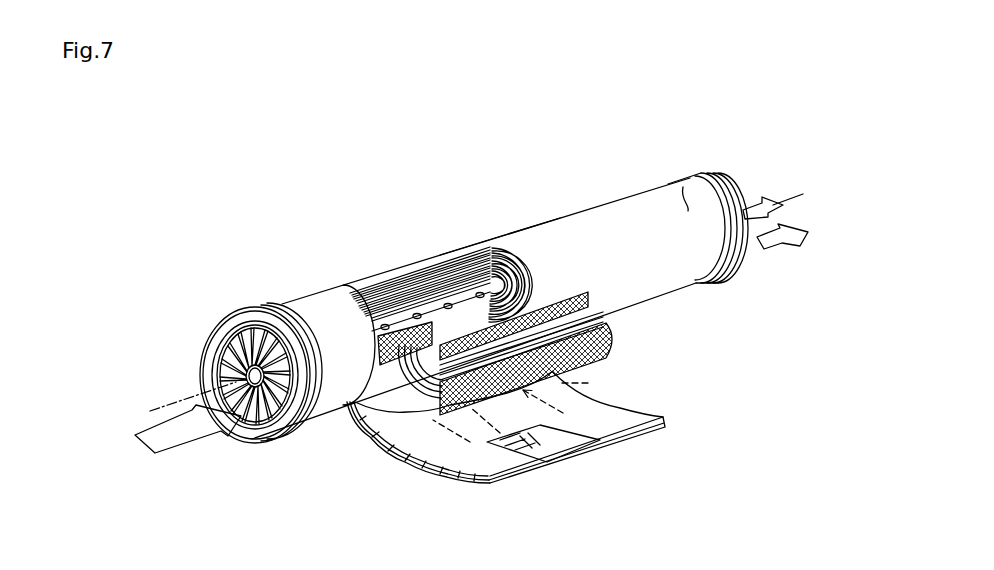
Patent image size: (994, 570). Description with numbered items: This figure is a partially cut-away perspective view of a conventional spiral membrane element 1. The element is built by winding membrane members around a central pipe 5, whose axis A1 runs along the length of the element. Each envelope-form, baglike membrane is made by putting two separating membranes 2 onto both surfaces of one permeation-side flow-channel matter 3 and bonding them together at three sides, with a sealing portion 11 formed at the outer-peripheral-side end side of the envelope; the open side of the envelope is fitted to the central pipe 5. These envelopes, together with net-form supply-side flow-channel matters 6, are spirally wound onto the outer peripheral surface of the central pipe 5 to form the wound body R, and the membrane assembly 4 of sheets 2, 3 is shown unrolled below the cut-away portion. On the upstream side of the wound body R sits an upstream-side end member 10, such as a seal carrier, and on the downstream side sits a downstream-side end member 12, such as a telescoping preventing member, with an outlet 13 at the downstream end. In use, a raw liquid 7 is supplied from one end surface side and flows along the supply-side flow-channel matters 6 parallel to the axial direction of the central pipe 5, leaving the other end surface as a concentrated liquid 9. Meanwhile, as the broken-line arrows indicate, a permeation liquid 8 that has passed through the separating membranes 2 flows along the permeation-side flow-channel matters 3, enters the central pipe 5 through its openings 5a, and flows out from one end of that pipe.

The membrane element 1 is at (685, 336).
The wound body R is at (508, 222).
The axis A1 is at (159, 400).
The separating membrane 2 is at (597, 322).
The permeation-side flow-channel matter 3 is at (517, 440).
The sheet assembly 4 is at (644, 454).
The central pipe 5 is at (468, 300).
The opening 5a is at (385, 322).
The supply-side flow-channel matter 6 is at (561, 297).
The raw liquid 7 is at (168, 441).
The permeation liquid 8 is at (762, 204).
The concentrated liquid 9 is at (769, 248).
The upstream-side end member 10 is at (249, 304).
The sealing portion 11 is at (571, 442).
The downstream-side end member 12 is at (721, 291).
The outlet port 13 is at (690, 174).